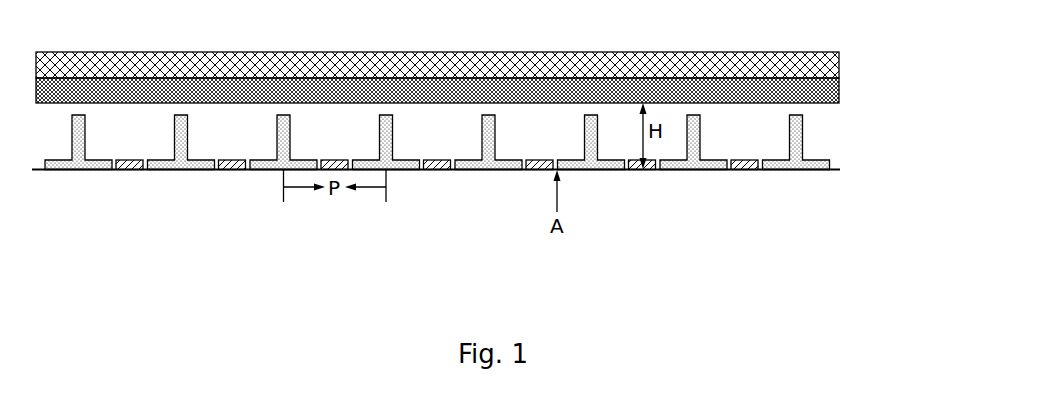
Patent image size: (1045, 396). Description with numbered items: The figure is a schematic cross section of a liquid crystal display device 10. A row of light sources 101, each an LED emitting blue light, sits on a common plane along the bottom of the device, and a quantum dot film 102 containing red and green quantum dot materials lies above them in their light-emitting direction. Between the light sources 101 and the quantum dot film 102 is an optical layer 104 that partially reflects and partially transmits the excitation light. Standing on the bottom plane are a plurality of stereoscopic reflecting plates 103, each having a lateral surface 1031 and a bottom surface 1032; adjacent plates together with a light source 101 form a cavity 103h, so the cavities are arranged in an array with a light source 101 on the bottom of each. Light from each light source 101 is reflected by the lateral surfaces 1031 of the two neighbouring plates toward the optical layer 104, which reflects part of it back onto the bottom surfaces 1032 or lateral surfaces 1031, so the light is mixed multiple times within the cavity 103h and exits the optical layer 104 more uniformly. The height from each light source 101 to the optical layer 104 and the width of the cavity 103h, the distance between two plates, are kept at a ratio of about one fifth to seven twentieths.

The liquid crystal display device 10 is at (470, 44).
The quantum dot film 102 is at (850, 66).
The optical layer 104 is at (850, 91).
The stereoscopic reflecting plate 103 is at (498, 138).
The lateral surface 1031 is at (812, 128).
The bottom surface 1032 is at (720, 155).
The cavity 103h is at (511, 148).
The light source 101 is at (436, 189).